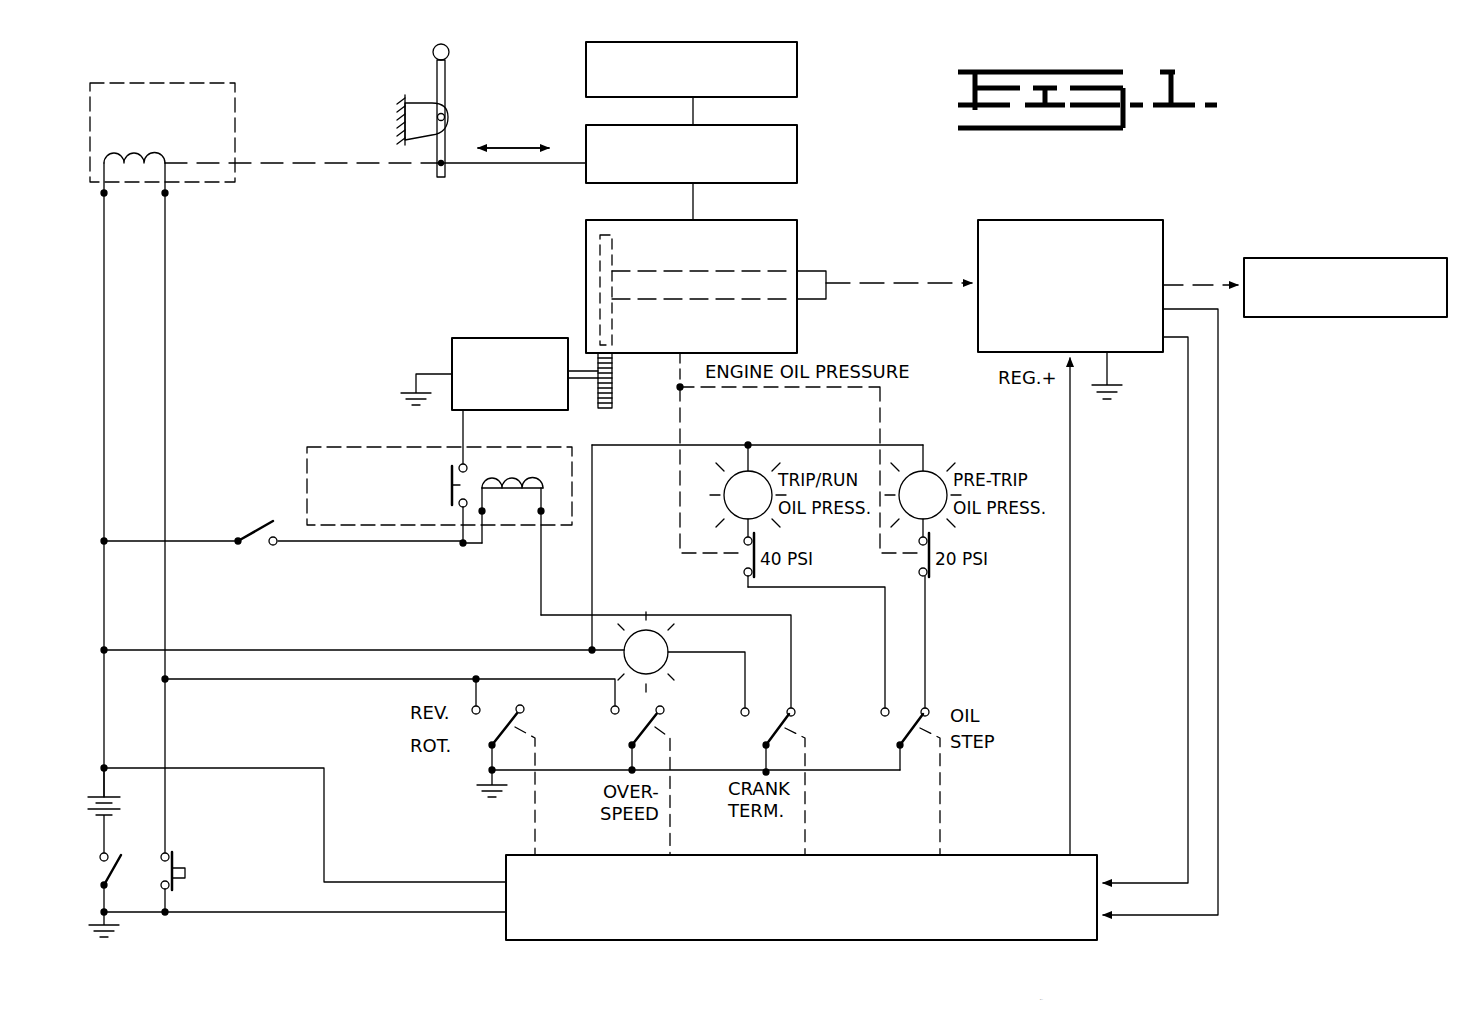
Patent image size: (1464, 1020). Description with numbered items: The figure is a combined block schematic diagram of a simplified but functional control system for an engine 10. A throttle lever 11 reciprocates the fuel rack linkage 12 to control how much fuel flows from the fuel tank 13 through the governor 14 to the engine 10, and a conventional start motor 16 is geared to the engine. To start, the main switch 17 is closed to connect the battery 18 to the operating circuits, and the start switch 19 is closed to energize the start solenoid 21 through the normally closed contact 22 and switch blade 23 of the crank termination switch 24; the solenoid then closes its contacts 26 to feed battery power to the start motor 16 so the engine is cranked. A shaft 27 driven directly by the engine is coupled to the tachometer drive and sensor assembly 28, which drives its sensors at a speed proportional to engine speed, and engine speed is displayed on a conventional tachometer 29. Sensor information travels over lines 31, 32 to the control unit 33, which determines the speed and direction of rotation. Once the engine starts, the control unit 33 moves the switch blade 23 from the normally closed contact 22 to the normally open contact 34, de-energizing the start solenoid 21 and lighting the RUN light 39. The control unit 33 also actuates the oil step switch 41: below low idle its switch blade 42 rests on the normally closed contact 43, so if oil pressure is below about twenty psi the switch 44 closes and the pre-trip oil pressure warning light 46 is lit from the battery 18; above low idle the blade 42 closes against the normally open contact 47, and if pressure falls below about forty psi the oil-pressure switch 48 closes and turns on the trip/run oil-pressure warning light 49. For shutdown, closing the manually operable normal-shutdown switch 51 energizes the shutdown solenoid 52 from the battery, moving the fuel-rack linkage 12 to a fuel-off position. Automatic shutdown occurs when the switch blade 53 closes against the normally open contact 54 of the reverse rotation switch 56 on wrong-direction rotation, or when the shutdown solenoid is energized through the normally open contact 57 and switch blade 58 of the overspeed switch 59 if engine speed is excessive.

The engine 10 is at (803, 240).
The throttle lever 11 is at (446, 72).
The fuel rack linkage 12 is at (503, 165).
The fuel tank 13 is at (797, 64).
The governor 14 is at (797, 149).
The start motor 16 is at (508, 338).
The main switch 17 is at (118, 870).
The battery 18 is at (114, 797).
The start switch 19 is at (245, 538).
The start solenoid 21 is at (307, 455).
The normally closed contact 22 is at (797, 715).
The switch blade 23 is at (765, 740).
The crank termination switch 24 is at (770, 702).
The contacts 26 is at (445, 466).
The shaft 27 is at (900, 282).
The tachometer drive and sensor assembly 28 is at (1028, 220).
The tachometer 29 is at (1360, 317).
The line 31 is at (1188, 440).
The line 32 is at (1218, 490).
The control unit 33 is at (1098, 852).
The normally open contact 34 is at (742, 718).
The RUN light 39 is at (668, 640).
The oil step switch 41 is at (906, 704).
The switch blade 42 is at (898, 742).
The normally closed contact 43 is at (930, 708).
The switch 44 is at (930, 570).
The pre-trip oil pressure warning light 46 is at (930, 470).
The normally open contact 47 is at (884, 706).
The oil-pressure switch 48 is at (756, 567).
The trip/run oil-pressure warning light 49 is at (748, 470).
The normal-shutdown switch 51 is at (177, 842).
The shutdown solenoid 52 is at (140, 168).
The switch blade 53 is at (480, 770).
The normally open contact 54 is at (478, 705).
The reverse rotation switch 56 is at (506, 698).
The normally open contact 57 is at (612, 715).
The switch blade 58 is at (630, 742).
The overspeed switch 59 is at (645, 700).